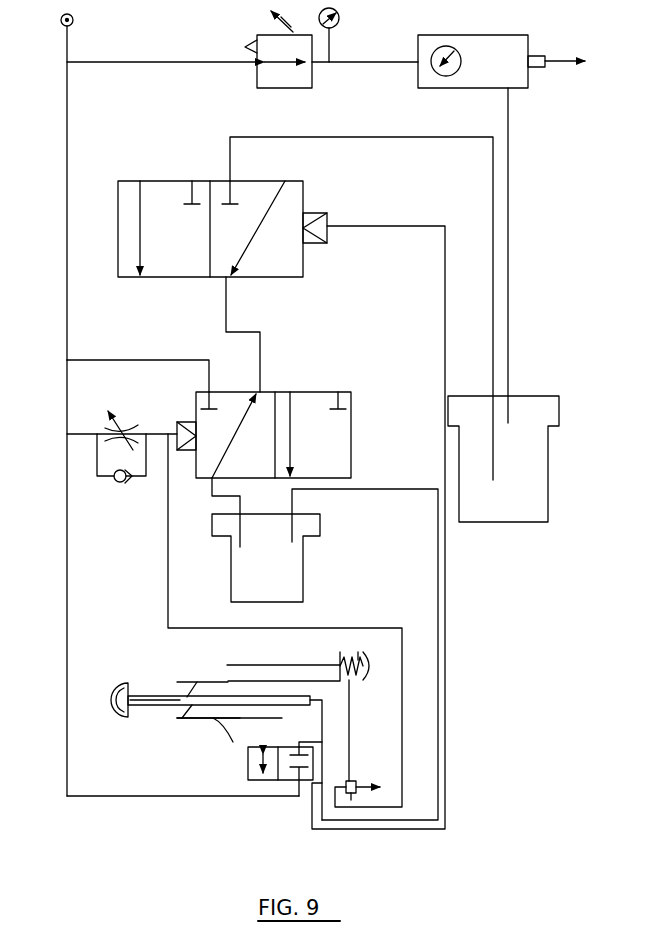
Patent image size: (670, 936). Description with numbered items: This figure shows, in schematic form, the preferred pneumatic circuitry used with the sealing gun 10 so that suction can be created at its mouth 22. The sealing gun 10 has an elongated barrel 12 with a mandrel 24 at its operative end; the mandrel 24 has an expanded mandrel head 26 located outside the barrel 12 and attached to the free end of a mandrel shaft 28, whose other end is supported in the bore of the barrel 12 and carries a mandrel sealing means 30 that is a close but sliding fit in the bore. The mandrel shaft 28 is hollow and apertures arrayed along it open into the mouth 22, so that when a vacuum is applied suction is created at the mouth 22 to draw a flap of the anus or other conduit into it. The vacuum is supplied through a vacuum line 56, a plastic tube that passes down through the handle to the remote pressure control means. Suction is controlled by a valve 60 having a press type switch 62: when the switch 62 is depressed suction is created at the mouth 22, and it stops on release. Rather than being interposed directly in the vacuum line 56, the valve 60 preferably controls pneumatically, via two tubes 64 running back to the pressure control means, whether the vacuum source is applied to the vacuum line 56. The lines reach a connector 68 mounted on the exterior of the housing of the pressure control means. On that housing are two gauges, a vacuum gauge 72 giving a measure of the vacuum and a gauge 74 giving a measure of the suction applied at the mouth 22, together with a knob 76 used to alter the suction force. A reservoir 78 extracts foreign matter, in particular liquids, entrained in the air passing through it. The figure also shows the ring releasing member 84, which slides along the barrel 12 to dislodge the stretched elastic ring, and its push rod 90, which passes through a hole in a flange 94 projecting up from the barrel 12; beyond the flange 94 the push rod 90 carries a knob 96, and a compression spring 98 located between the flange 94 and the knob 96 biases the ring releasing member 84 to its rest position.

The sealing gun 10 is at (172, 647).
The barrel 12 is at (190, 681).
The mouth 22 is at (157, 712).
The mandrel 24 is at (117, 683).
The mandrel head 26 is at (112, 701).
The mandrel shaft 28 is at (148, 695).
The mandrel sealing means 30 is at (187, 705).
The vacuum line 56 is at (437, 594).
The valve 60 is at (257, 796).
The press type switch 62 is at (246, 765).
The tubes 64 is at (447, 722).
The connector 68 is at (540, 67).
The vacuum gauge 72 is at (339, 16).
The gauge 74 is at (452, 48).
The knob 76 is at (257, 35).
The reservoir 78 is at (304, 556).
The ring releasing member 84 is at (220, 680).
The push rod 90 is at (259, 665).
The flange 94 is at (338, 657).
The knob 96 is at (372, 660).
The compression spring 98 is at (358, 652).